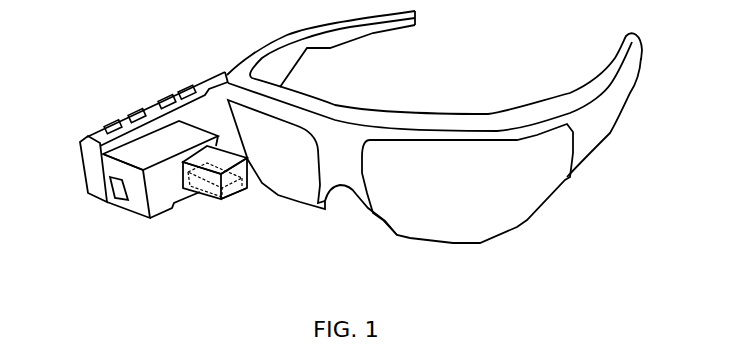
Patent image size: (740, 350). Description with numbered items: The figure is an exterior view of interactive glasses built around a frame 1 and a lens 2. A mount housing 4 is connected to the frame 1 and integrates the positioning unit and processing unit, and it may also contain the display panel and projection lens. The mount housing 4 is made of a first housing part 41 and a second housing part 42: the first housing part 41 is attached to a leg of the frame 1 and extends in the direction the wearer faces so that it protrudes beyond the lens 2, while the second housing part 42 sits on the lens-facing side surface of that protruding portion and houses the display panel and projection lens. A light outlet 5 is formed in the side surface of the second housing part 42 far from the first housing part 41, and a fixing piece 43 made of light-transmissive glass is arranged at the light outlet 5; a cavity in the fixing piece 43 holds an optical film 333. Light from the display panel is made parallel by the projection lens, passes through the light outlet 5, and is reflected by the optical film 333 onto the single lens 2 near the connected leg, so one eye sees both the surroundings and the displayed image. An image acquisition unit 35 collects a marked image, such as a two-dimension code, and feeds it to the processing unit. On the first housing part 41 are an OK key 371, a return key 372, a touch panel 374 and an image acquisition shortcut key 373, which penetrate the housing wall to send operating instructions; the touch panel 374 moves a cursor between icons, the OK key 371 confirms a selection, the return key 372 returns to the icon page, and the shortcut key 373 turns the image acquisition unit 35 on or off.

The frame 1 is at (490, 112).
The lens 2 is at (445, 236).
The mount housing 4 is at (146, 183).
The first housing part 41 is at (87, 196).
The second housing part 42 is at (114, 204).
The image acquisition unit 35 is at (120, 212).
The light outlet 5 is at (200, 200).
The optical film 333 is at (224, 200).
The fixing piece 43 is at (237, 198).
The OK key 371 is at (163, 96).
The return key 372 is at (188, 87).
The image acquisition shortcut key 373 is at (109, 123).
The touch panel 374 is at (140, 110).